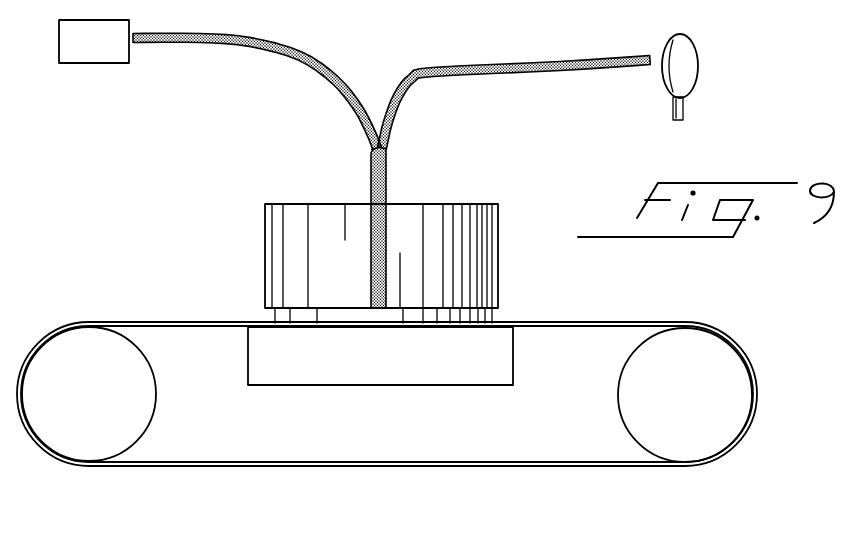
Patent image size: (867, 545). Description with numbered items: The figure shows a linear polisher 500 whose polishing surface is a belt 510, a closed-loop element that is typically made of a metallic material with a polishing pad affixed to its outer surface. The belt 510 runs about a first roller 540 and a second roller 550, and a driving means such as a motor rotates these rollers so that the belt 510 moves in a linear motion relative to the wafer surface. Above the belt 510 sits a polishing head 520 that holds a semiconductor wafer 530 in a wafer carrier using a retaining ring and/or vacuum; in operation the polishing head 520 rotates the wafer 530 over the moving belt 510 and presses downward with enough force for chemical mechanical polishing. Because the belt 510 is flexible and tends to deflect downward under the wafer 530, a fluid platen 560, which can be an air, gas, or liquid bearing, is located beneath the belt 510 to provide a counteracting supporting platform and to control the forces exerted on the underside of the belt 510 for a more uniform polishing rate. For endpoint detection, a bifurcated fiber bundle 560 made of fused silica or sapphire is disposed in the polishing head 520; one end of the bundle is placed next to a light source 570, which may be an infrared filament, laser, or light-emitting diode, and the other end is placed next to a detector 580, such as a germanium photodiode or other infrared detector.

The linear polisher 500 is at (204, 220).
The belt 510 is at (612, 323).
The polishing head 520 is at (452, 205).
The semiconductor wafer 530 is at (272, 316).
The first roller 540 is at (68, 442).
The second roller 550 is at (717, 433).
The fluid platen 560 is at (514, 66).
The light source 570 is at (689, 72).
The detector 580 is at (117, 58).